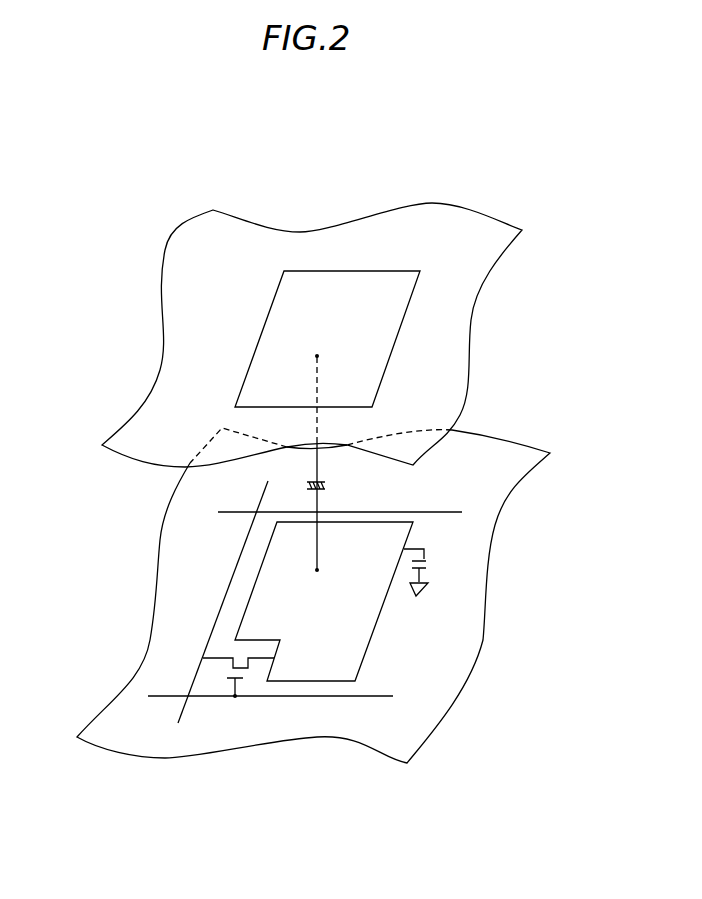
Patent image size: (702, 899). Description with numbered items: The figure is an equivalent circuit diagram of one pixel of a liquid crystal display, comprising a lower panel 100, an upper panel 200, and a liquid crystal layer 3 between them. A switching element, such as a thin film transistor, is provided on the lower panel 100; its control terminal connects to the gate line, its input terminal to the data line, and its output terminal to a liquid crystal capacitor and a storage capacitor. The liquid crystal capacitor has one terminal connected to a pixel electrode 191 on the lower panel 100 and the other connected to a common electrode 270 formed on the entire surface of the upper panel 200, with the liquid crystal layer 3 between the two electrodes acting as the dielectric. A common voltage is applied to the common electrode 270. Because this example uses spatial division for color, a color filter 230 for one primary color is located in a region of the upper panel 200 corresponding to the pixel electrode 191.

The upper panel 200 is at (331, 335).
The common electrode 270 is at (453, 323).
The color filter 230 is at (392, 350).
The lower panel 100 is at (495, 580).
The pixel electrode 191 is at (372, 638).
The liquid crystal layer 3 is at (96, 522).